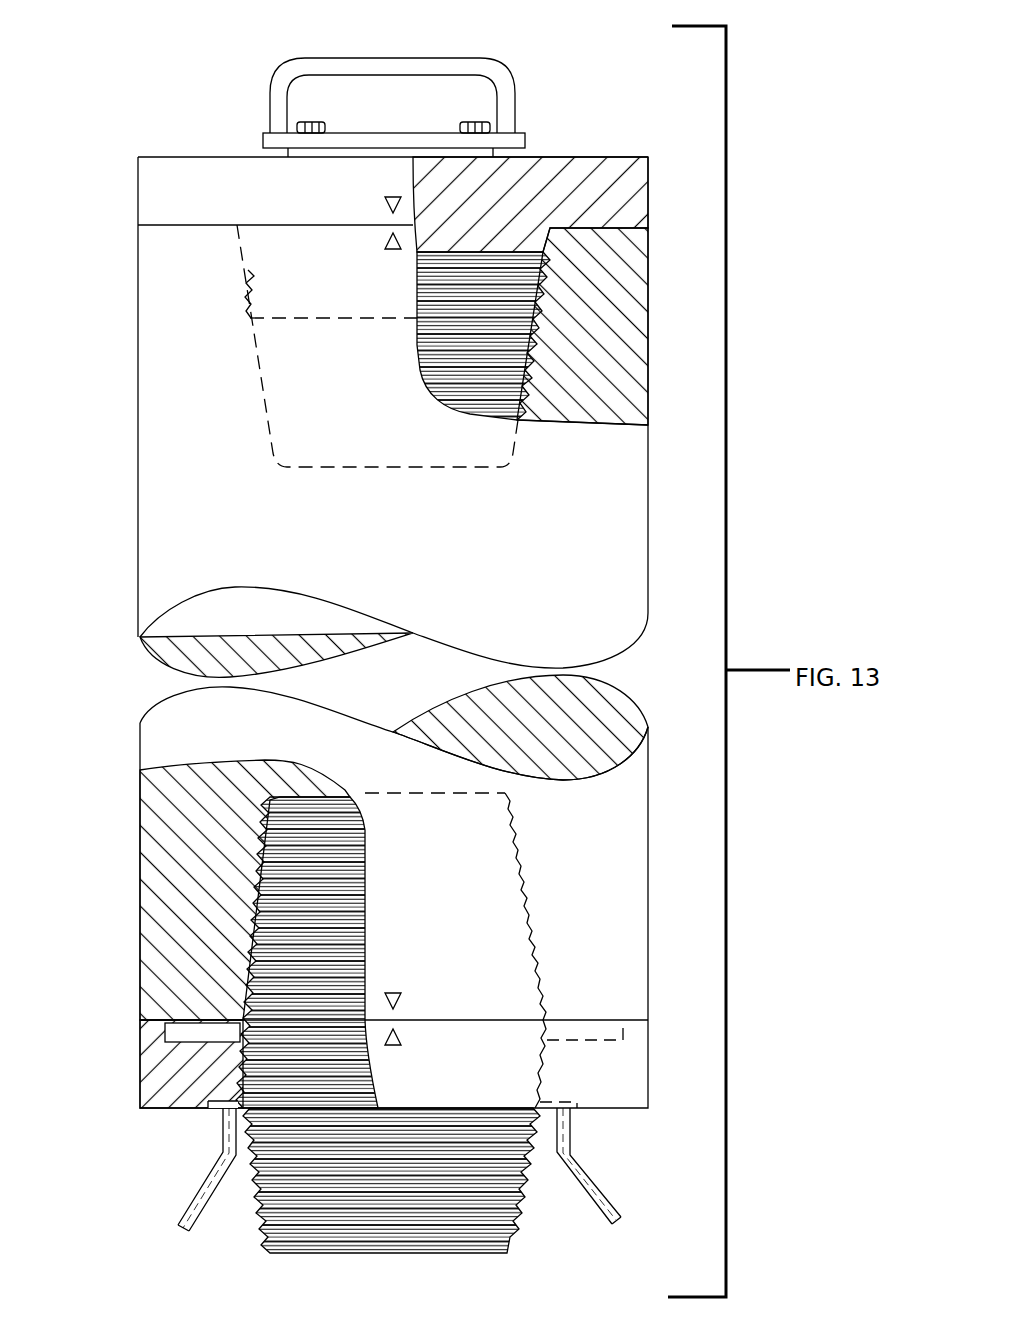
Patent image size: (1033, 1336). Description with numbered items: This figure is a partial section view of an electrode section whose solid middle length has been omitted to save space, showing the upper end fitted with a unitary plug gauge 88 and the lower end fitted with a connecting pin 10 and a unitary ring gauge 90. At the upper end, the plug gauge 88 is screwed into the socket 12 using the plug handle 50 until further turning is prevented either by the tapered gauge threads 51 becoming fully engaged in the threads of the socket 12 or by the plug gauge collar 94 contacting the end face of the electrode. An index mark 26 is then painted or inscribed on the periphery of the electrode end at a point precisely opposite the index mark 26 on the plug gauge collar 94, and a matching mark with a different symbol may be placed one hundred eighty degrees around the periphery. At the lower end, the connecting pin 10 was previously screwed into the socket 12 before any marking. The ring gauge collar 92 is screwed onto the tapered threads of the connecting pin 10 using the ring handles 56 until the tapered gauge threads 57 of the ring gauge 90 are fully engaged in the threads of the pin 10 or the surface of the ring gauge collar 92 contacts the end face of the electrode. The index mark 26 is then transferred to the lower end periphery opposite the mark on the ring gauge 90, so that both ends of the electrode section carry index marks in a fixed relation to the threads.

The connecting pin 10 is at (517, 1210).
The socket 12 is at (518, 476).
The index mark 26 is at (385, 204).
The plug handle 50 is at (455, 63).
The tapered gauge threads 51 is at (538, 305).
The ring handles 56 is at (201, 1204).
The tapered gauge threads 57 is at (543, 1072).
The unitary plug gauge 88 is at (134, 175).
The unitary ring gauge 90 is at (652, 1077).
The ring gauge collar 92 is at (640, 1022).
The plug gauge collar 94 is at (650, 166).